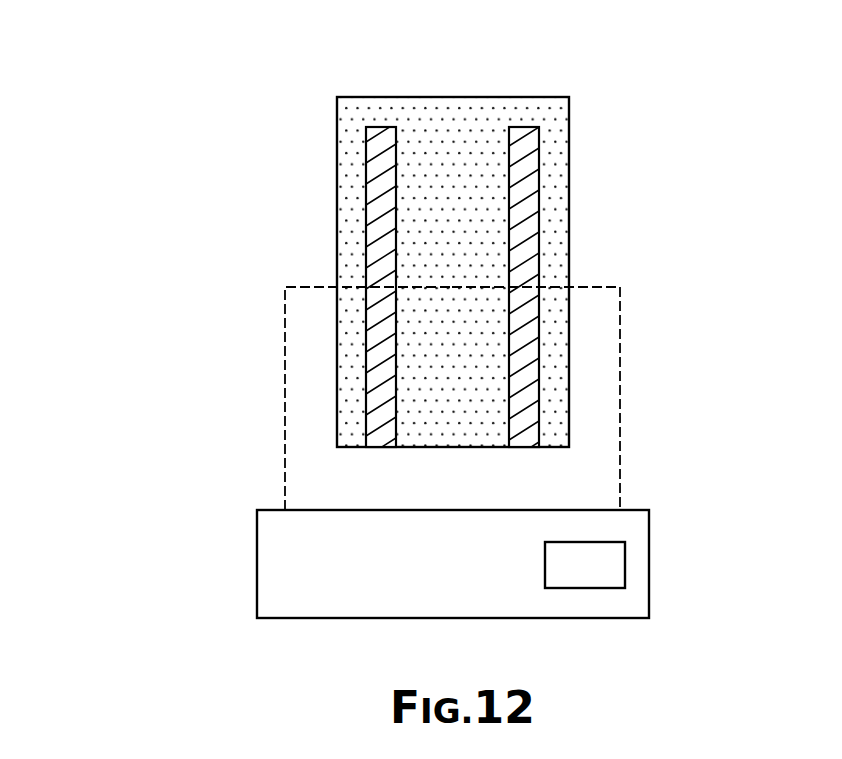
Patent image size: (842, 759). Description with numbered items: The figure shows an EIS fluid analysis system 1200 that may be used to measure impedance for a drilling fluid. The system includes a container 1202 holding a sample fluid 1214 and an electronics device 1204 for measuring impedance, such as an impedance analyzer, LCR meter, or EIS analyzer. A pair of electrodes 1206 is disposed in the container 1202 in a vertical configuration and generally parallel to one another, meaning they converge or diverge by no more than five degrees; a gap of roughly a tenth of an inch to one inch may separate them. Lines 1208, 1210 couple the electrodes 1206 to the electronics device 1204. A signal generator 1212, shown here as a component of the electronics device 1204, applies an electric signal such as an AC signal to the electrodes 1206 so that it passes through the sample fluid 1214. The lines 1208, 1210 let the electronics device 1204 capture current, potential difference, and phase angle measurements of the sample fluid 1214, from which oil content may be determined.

The EIS fluid analysis system 1200 is at (130, 138).
The container 1202 is at (569, 177).
The electronics device 1204 is at (257, 545).
The electrodes 1206 is at (387, 127).
The line 1208 is at (285, 388).
The line 1210 is at (620, 388).
The signal generator 1212 is at (625, 563).
The sample fluid 1214 is at (453, 133).